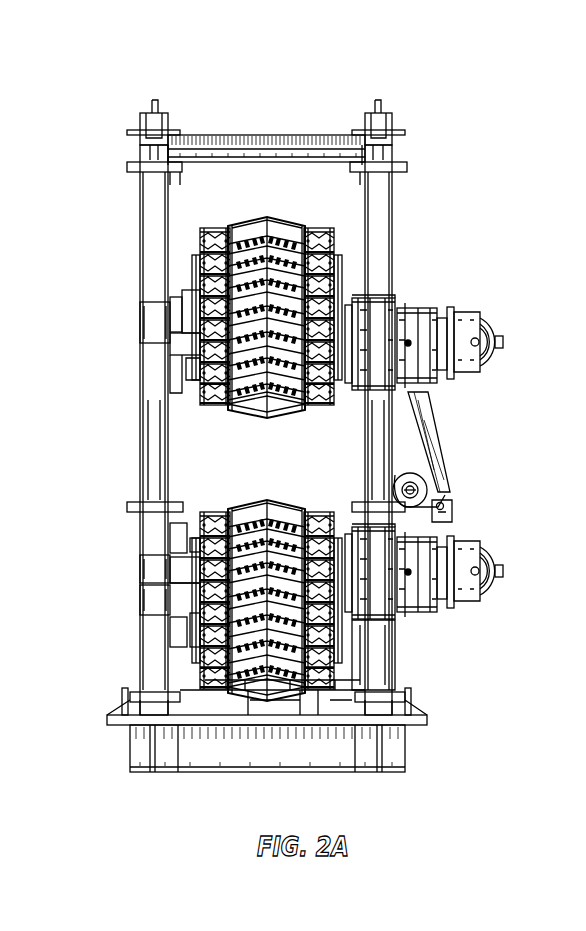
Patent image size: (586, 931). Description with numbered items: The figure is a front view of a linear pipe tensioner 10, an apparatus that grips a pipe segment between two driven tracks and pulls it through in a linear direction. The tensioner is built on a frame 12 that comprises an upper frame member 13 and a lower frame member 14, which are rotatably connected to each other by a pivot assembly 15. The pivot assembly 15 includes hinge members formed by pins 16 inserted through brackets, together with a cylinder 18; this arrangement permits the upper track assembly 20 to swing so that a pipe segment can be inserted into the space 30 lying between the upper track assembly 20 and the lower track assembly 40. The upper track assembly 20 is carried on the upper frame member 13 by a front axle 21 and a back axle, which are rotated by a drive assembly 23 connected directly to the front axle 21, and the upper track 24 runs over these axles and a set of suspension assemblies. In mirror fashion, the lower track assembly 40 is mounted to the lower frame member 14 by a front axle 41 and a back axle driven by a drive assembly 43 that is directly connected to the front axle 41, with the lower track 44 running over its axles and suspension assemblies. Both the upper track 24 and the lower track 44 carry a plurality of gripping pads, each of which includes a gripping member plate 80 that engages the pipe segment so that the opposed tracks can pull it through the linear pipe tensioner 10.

The linear pipe tensioner 10 is at (493, 82).
The frame 12 is at (262, 133).
The upper frame member 13 is at (390, 222).
The lower frame member 14 is at (155, 543).
The pivot assembly 15 is at (443, 438).
The pins 16 is at (443, 506).
The cylinder 18 is at (423, 420).
The upper track assembly 20 is at (262, 218).
The front axle 21 is at (185, 345).
The drive assembly 23 is at (425, 305).
The upper track 24 is at (212, 236).
The space 30 is at (245, 448).
The lower track assembly 40 is at (212, 511).
The front axle 41 is at (185, 570).
The drive assembly 43 is at (445, 605).
The lower track 44 is at (200, 625).
The gripping member plate 80 is at (276, 505).